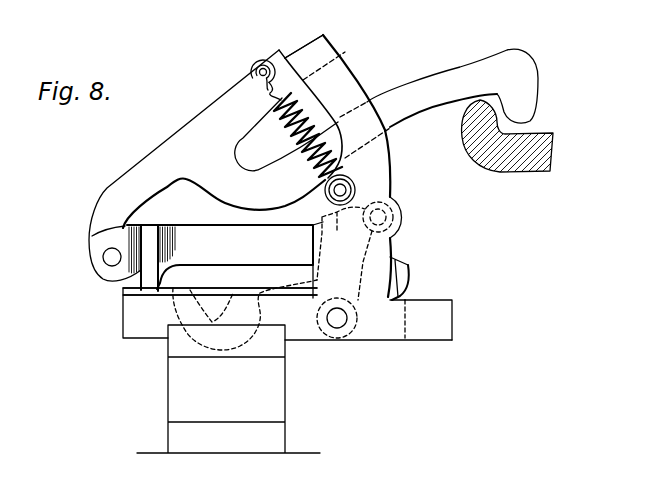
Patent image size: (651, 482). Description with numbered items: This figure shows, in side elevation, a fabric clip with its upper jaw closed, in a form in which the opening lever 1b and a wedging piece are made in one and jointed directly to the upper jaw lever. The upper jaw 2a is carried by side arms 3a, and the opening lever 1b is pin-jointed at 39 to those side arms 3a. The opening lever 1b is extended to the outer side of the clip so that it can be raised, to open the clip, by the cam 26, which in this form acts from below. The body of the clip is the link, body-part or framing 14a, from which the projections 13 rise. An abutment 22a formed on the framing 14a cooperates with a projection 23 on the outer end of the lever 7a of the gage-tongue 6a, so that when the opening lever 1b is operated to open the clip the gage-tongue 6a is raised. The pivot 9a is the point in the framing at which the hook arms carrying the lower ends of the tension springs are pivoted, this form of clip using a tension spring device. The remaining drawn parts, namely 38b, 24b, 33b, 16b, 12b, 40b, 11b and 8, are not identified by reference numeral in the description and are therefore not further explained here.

The opening lever 1b is at (411, 166).
The lever pad 38b is at (323, 46).
The housing edge 24b is at (283, 48).
The spring hook 33b is at (258, 74).
The spring 16b is at (283, 127).
The projections 13 is at (348, 182).
The body arm 12b is at (330, 183).
The shoulder 40b is at (305, 210).
The pivot hole 8 is at (394, 217).
The latch arm 11b is at (344, 253).
The side arms 3a is at (220, 257).
The gage-tongue 6a is at (183, 287).
The lever of the gage-tongue 7a is at (187, 297).
The pin joint 39 is at (112, 257).
The upper jaw 2a is at (153, 272).
The projection 23 is at (407, 267).
The abutment 22a is at (400, 300).
The framing 14a is at (428, 320).
The pivot 9a is at (338, 318).
The cam 26 is at (511, 147).